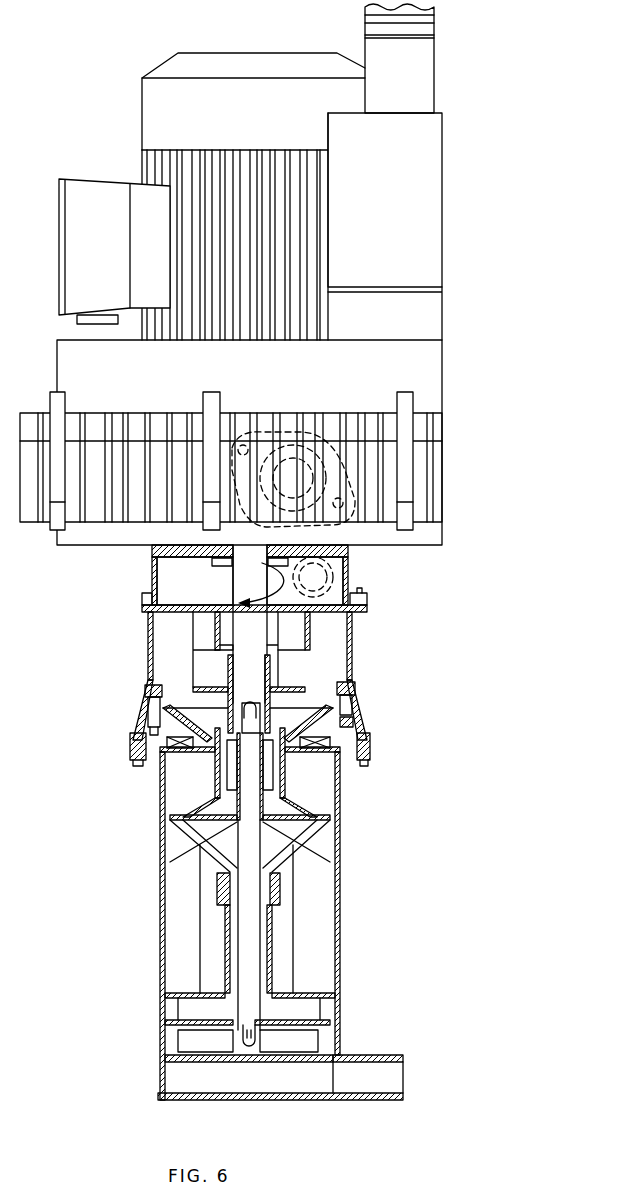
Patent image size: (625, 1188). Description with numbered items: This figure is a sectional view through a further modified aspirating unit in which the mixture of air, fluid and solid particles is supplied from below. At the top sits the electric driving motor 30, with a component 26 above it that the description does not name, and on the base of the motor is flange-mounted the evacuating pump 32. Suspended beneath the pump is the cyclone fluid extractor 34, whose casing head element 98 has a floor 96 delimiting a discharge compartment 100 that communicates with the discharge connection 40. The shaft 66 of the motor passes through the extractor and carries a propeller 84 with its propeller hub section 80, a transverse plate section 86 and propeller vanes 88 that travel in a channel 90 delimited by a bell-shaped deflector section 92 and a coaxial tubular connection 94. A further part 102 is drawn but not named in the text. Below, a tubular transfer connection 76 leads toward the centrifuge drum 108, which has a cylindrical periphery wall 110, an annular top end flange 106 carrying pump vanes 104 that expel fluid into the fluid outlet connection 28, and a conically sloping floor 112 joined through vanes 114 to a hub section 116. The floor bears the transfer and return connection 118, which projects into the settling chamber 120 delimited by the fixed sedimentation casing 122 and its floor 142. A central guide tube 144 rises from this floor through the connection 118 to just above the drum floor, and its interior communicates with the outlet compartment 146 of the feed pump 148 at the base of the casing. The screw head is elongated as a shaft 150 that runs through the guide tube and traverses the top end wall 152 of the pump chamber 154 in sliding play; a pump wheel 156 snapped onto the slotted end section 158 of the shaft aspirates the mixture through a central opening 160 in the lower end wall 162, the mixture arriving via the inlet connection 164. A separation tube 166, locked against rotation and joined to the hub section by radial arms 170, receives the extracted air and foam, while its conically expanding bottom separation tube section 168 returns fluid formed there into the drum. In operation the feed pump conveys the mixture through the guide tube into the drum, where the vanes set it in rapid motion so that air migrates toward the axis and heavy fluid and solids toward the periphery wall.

The electrical conduit 26 is at (413, 62).
The electric driving motor 30 is at (278, 252).
The evacuating pump 32 is at (372, 473).
The shaft 66 is at (258, 556).
The discharge connection 40 is at (353, 562).
The floor of casing head element 96 is at (340, 577).
The casing head element 98 is at (152, 560).
The discharge compartment 100 is at (202, 592).
The tubular connection 94 is at (307, 621).
The bell-shaped deflector section 92 is at (295, 633).
The channel 90 is at (207, 621).
The inner chamber wall 102 is at (162, 660).
The propeller hub section 80 is at (296, 680).
The propeller 84 is at (195, 665).
The cyclone fluid extractor 34 is at (395, 672).
The propeller vanes 88 is at (222, 695).
The transverse plate section 86 is at (165, 704).
The tubular transfer connection 76 is at (353, 702).
The pump vanes 104 is at (330, 730).
The fluid outlet connection 28 is at (157, 747).
The annular top end flange 106 is at (310, 771).
The centrifuge drum 108 is at (170, 774).
The cylindrical periphery wall 110 is at (340, 792).
The separation tube 166 is at (217, 779).
The hub section 116 is at (237, 767).
The floor of centrifuge drum 112 is at (327, 848).
The bottom separation tube section 168 is at (233, 782).
The vanes 114 is at (293, 863).
The radial arms 170 is at (222, 825).
The transfer and return connection 118 is at (280, 893).
The shaft 150 is at (250, 912).
The sedimentation casing 122 is at (340, 932).
The guide tube 144 is at (223, 952).
The settling chamber 120 is at (285, 952).
The outlet compartment 146 is at (185, 1005).
The floor of sedimentation casing 142 is at (313, 993).
The top end wall 152 is at (172, 1015).
The pump wheel 156 is at (300, 1042).
The pump chamber 154 is at (168, 1042).
The inlet connection 164 is at (383, 1055).
The lower end wall 162 is at (173, 1062).
The feed pump 148 is at (122, 1102).
The central opening 160 is at (242, 1062).
The slotted end section 158 is at (257, 1045).